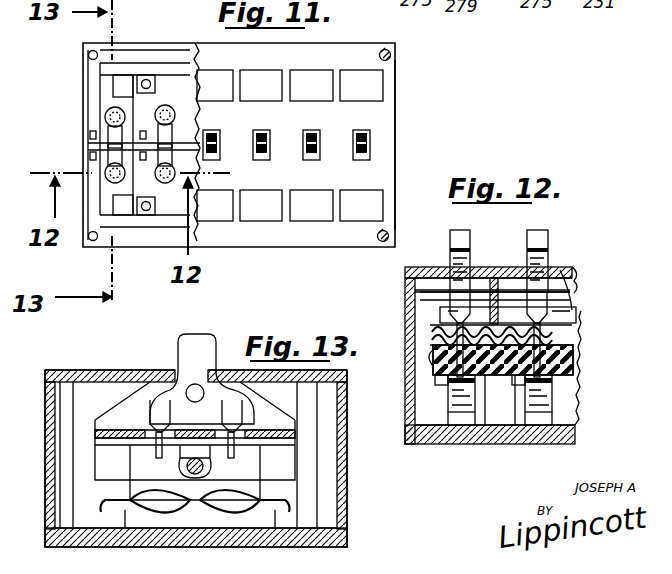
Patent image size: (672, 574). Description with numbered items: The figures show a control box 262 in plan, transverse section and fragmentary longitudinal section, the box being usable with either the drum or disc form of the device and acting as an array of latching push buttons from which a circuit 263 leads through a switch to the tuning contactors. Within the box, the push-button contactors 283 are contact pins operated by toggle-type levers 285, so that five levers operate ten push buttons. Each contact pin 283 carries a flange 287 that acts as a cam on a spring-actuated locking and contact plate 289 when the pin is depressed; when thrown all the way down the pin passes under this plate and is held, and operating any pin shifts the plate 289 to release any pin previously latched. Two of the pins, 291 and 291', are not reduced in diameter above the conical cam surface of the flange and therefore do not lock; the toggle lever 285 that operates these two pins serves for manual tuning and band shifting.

In FIG. 11, the control box 262 is at (394, 116).
In FIG. 12, the circuit 263 is at (412, 301).
In FIG. 13, the circuit 263 is at (336, 468).
In FIG. 12, the push-button contactors (contact pins) 283 is at (570, 296).
In FIG. 11, the toggle-type levers 285 is at (356, 128).
In FIG. 12, the toggle-type levers 285 is at (538, 242).
In FIG. 13, the toggle-type levers 285 is at (180, 347).
In FIG. 12, the flanges 287 is at (570, 322).
In FIG. 12, the spring-actuated locking and contact plate 289 is at (574, 350).
In FIG. 13, the spring-actuated locking and contact plate 289 is at (270, 439).
In FIG. 11, the non-locking contact pin 291 is at (102, 144).
In FIG. 12, the non-locking contact pin 291 is at (479, 335).
In FIG. 13, the non-locking contact pin 291 is at (263, 422).
In FIG. 11, the non-locking contact pin 291' is at (77, 129).
In FIG. 13, the non-locking contact pin 291' is at (125, 421).